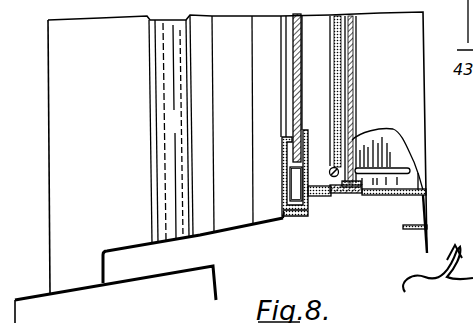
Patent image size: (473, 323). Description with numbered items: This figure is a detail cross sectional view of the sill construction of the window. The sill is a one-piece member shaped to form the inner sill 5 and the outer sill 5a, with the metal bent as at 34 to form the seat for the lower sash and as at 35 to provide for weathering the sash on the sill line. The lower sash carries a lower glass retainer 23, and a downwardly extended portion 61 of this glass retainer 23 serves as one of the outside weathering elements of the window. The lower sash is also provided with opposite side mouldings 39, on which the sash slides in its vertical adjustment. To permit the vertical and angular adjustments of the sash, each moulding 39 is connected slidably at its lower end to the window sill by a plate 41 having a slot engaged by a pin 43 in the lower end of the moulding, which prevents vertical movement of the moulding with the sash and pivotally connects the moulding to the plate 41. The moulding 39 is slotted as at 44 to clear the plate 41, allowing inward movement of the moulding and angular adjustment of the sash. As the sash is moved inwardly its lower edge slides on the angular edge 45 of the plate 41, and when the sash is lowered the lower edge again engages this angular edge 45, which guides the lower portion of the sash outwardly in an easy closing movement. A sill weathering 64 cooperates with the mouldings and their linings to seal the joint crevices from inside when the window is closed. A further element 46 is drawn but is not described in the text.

The inner sill 5 is at (423, 190).
The outer sill 5a is at (126, 249).
The lower glass retainer 23 is at (282, 166).
The seat for the lower sash 34 is at (300, 210).
The weathering portion of the sill 35 is at (285, 218).
The side moulding 39 is at (347, 41).
The plate 41 is at (400, 153).
The pin 43 is at (329, 170).
The slot in moulding 44 is at (362, 126).
The angular edge of plate 45 is at (393, 129).
The guide bar 46 is at (412, 170).
The downwardly extended portion of glass retainer 61 is at (290, 190).
The sill weathering 64 is at (332, 196).